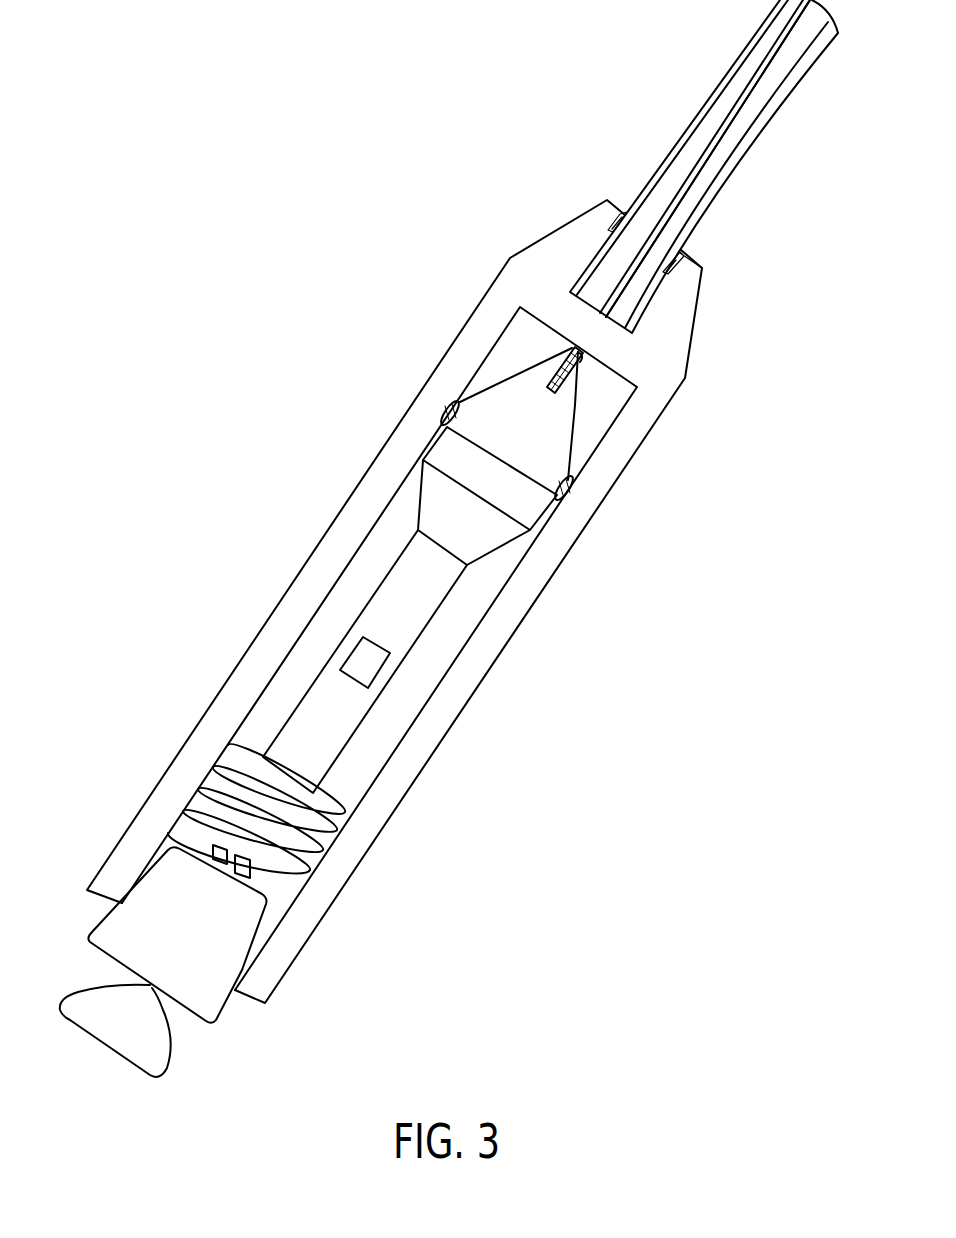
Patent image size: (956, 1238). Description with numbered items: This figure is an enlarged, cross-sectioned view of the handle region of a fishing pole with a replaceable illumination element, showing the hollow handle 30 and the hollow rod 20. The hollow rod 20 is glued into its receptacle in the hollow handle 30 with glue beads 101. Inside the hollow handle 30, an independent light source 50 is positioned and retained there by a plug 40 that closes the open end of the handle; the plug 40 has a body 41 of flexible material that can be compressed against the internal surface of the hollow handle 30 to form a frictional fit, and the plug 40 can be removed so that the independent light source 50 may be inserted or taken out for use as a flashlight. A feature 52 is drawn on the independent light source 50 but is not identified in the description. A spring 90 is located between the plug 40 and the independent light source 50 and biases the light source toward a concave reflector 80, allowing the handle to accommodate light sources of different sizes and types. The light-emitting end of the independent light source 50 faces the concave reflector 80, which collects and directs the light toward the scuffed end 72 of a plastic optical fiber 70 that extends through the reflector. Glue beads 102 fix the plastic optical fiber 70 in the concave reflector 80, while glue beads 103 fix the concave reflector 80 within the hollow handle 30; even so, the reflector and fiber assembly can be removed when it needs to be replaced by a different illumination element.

The hollow rod 20 is at (722, 82).
The hollow handle 30 is at (296, 578).
The plug 40 is at (212, 1025).
The body 41 is at (126, 1058).
The independent light source 50 is at (362, 724).
The window 52 is at (377, 658).
The plastic optical fiber 70 is at (730, 128).
The scuffed end 72 is at (548, 389).
The concave reflector 80 is at (578, 400).
The spring 90 is at (228, 745).
The glue beads 101 is at (702, 275).
The glue beads 102 is at (574, 346).
The glue beads 103 is at (561, 481).